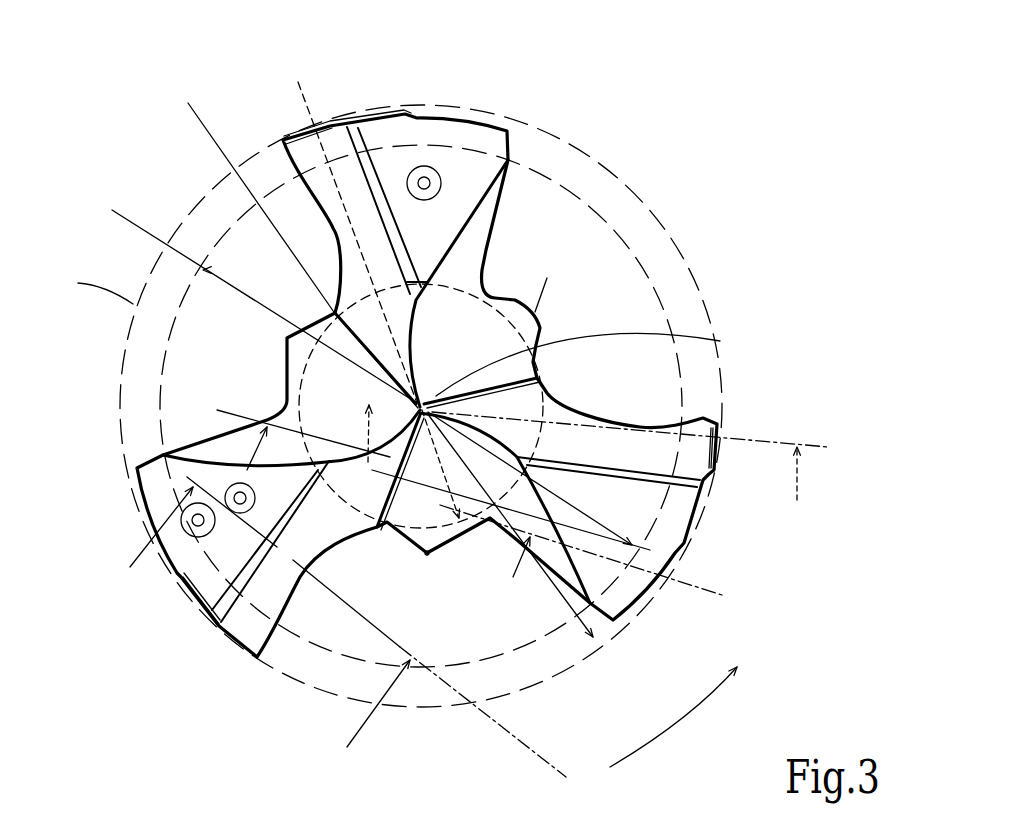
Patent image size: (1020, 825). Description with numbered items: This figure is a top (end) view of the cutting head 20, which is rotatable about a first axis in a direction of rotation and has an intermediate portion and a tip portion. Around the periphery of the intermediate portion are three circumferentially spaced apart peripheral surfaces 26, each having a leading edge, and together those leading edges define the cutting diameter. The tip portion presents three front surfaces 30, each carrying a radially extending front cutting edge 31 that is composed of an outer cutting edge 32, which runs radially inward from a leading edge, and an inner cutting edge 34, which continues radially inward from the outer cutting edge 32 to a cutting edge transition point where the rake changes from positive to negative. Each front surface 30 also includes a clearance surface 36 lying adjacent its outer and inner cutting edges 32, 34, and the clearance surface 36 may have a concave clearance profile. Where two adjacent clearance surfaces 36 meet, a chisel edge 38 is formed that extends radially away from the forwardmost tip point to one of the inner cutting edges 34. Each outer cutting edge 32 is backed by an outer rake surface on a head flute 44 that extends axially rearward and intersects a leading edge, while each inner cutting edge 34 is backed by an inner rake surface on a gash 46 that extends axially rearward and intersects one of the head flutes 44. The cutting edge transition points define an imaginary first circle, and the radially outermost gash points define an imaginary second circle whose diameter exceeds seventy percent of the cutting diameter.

The cutting head 20 is at (562, 318).
The peripheral surface 26 is at (380, 107).
The front surface 30 is at (392, 185).
The front cutting edge 31 is at (760, 345).
The outer cutting edge 32 is at (328, 212).
The inner cutting edge 34 is at (333, 310).
The clearance surface 36 is at (456, 374).
The chisel edge 38 is at (376, 381).
The head flute 44 is at (330, 233).
The gash 46 is at (390, 420).